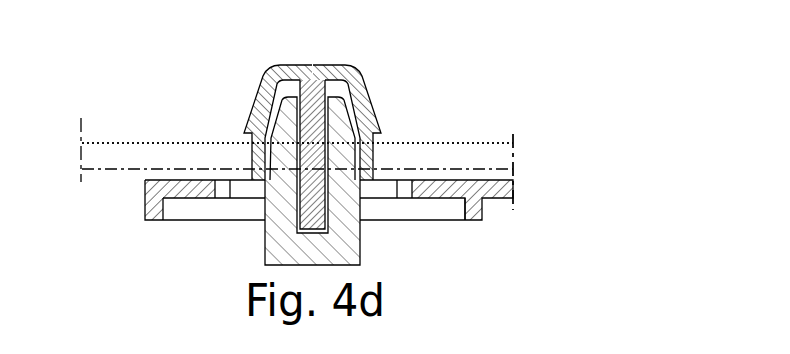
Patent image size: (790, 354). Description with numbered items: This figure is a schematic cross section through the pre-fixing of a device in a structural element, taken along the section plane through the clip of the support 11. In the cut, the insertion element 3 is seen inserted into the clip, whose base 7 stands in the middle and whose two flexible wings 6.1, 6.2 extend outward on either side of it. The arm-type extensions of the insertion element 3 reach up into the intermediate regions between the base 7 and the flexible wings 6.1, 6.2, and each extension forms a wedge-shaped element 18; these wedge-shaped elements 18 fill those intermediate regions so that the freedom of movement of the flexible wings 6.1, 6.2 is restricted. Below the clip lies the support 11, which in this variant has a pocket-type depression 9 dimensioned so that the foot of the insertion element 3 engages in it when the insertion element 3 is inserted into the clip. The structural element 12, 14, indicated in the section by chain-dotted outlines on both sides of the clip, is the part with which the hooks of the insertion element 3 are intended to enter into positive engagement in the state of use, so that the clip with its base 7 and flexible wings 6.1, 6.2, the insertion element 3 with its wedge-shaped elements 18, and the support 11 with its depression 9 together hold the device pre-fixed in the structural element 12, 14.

The insertion element 3 is at (343, 248).
The flexible wing 6.1 is at (267, 100).
The flexible wing 6.2 is at (374, 118).
The base 7 is at (313, 112).
The pocket-type depression 9 is at (198, 213).
The support 11 is at (514, 187).
The structural element 12 is at (510, 158).
The structural element 14 is at (370, 161).
The wedge-shaped element 18 is at (287, 157).